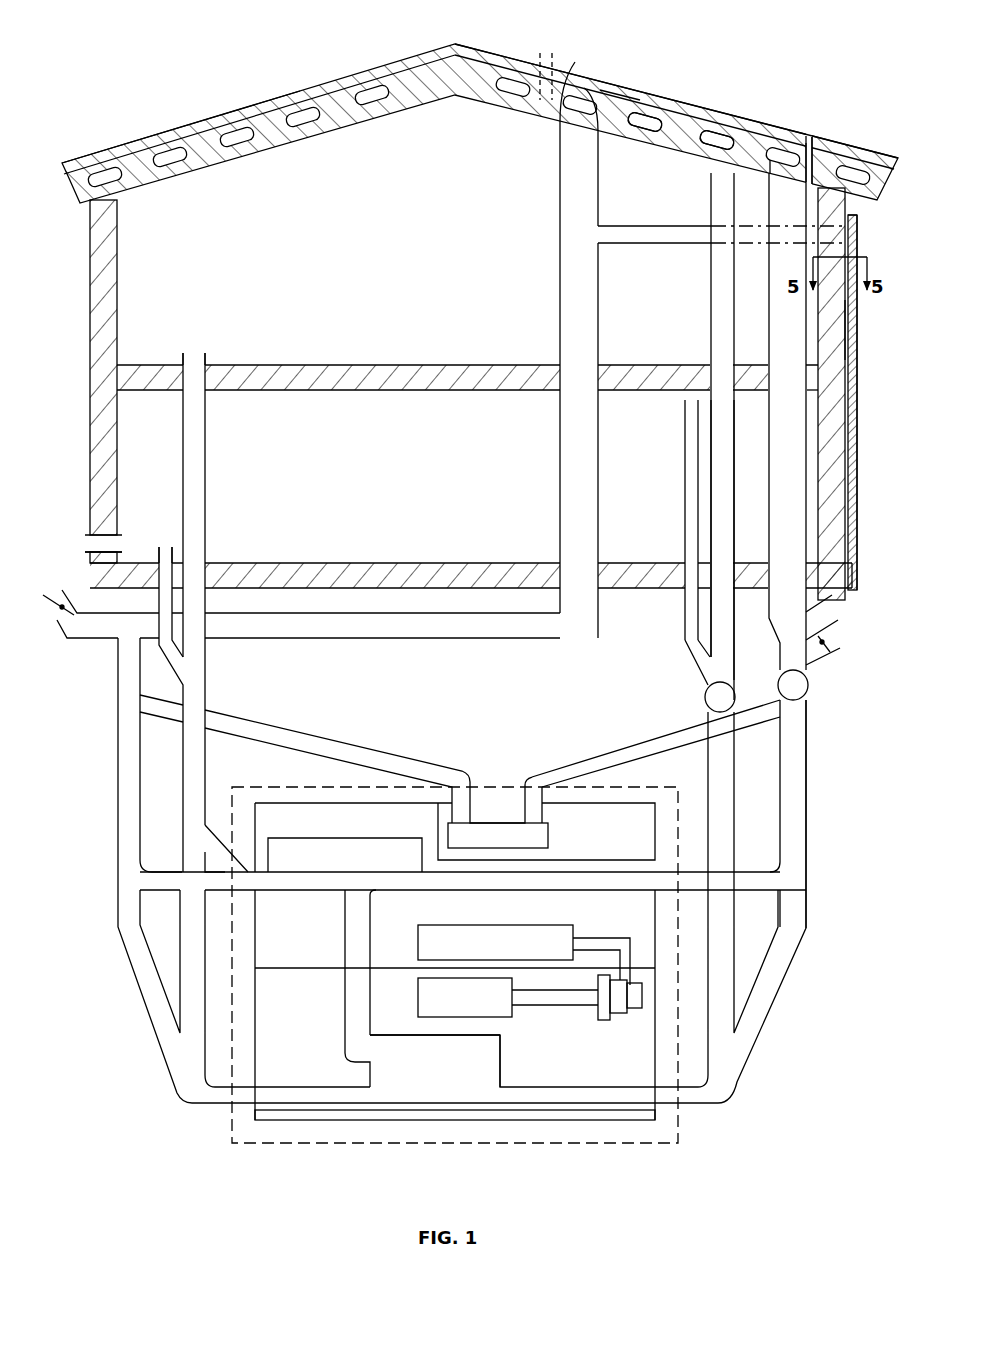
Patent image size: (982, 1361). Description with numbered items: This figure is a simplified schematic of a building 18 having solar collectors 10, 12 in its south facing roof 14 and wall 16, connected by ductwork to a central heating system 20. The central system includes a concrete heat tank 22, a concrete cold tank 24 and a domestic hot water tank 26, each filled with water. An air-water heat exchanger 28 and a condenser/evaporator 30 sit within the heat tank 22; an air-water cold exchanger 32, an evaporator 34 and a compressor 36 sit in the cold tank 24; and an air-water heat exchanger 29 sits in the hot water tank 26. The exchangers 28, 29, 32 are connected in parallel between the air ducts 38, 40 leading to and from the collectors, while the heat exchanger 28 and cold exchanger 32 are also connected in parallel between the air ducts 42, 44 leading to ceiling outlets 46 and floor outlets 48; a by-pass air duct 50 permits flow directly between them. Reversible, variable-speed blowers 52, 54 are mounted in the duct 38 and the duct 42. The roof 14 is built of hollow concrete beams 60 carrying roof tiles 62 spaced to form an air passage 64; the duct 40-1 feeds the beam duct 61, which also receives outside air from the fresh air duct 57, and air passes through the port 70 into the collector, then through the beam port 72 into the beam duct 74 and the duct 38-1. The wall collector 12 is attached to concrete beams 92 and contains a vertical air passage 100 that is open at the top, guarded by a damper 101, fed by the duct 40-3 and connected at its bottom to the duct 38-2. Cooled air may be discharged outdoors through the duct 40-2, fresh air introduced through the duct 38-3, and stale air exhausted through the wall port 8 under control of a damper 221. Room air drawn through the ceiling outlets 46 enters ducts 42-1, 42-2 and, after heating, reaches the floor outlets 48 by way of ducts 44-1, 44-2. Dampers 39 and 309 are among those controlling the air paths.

The wall port 8 is at (100, 544).
The solar collector 10 is at (645, 90).
The wall collector 12 is at (858, 347).
The roof 14 is at (494, 52).
The wall 16 is at (860, 458).
The building 18 is at (148, 131).
The central heating system 20 is at (605, 1143).
The heat tank 22 is at (345, 803).
The cold tank 24 is at (378, 1121).
The domestic hot water tank 26 is at (597, 810).
The air-water heat exchanger 28 is at (368, 838).
The air-water heat exchanger 29 is at (549, 836).
The condenser/evaporator 30 is at (432, 937).
The air-water cold exchanger 32 is at (475, 1066).
The evaporator 34 is at (416, 1003).
The compressor 36 is at (606, 1012).
The air duct 38 is at (795, 897).
The duct 38-1 is at (776, 430).
The duct 38-2 is at (832, 600).
The duct 38-3 is at (835, 640).
The damper 39 is at (840, 655).
The air duct 40 is at (120, 905).
The duct 40-1 is at (560, 433).
The duct 40-2 is at (70, 628).
The duct 40-3 is at (678, 246).
The air duct 42 is at (722, 897).
The duct 42-1 is at (690, 530).
The duct 42-2 is at (725, 545).
The air duct 44 is at (190, 904).
The duct 44-1 is at (160, 614).
The duct 44-2 is at (207, 432).
The ceiling outlet 46 is at (714, 180).
The floor outlet 48 is at (206, 350).
The by-pass air duct 50 is at (345, 988).
The blower 52 is at (798, 688).
The blower 54 is at (724, 697).
The fresh air duct 57 is at (548, 58).
The hollow concrete beam 60 is at (680, 140).
The beam duct 61 is at (582, 116).
The roof tile 62 is at (615, 92).
The air passage 64 is at (690, 122).
The port 70 is at (571, 82).
The beam port 72 is at (815, 145).
The beam duct 74 is at (786, 152).
The concrete beam 92 is at (850, 334).
The vertical air passage 100 is at (858, 386).
The damper 101 is at (851, 212).
The damper 221 is at (100, 547).
The damper 309 is at (60, 600).